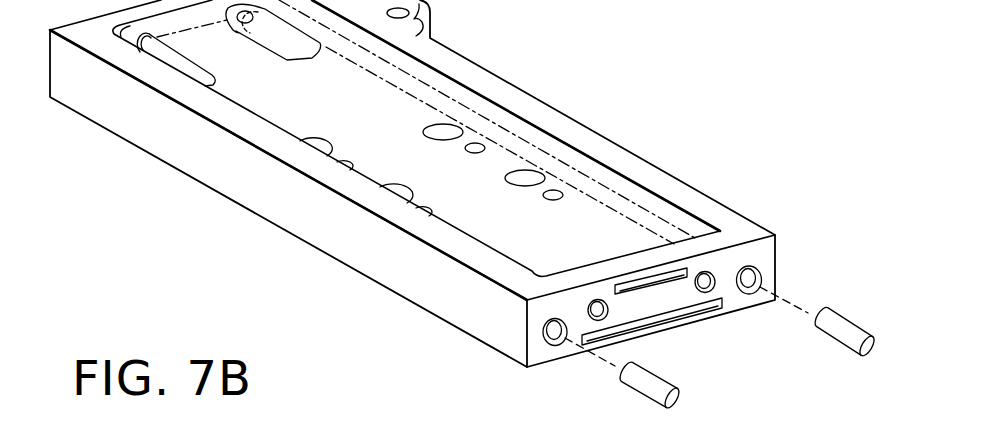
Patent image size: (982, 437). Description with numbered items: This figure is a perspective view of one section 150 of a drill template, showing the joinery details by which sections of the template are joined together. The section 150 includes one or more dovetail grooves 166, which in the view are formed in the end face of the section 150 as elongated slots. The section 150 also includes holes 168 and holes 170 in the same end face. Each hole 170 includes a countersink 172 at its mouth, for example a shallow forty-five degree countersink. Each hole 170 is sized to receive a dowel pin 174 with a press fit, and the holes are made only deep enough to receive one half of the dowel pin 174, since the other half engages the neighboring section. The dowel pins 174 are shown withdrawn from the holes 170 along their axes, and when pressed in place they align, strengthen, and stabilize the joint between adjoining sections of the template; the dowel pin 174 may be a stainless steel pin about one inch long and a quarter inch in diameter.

The section 150 is at (232, 200).
The dovetail grooves 166 is at (651, 289).
The holes 168 is at (714, 285).
The holes 170 is at (546, 330).
The countersink 172 is at (563, 350).
The dowel pin 174 is at (661, 389).